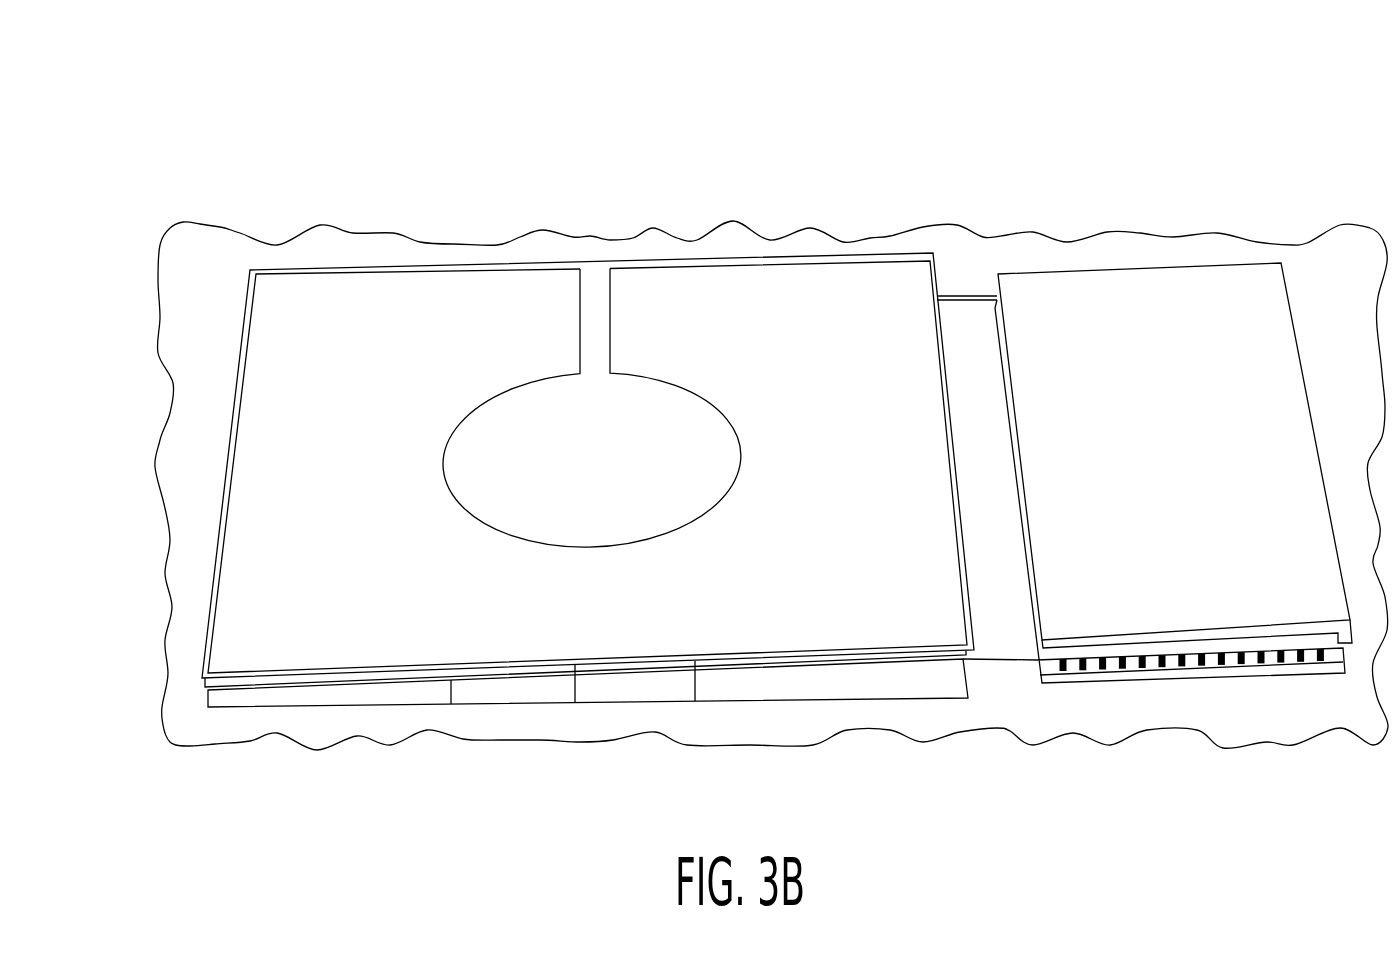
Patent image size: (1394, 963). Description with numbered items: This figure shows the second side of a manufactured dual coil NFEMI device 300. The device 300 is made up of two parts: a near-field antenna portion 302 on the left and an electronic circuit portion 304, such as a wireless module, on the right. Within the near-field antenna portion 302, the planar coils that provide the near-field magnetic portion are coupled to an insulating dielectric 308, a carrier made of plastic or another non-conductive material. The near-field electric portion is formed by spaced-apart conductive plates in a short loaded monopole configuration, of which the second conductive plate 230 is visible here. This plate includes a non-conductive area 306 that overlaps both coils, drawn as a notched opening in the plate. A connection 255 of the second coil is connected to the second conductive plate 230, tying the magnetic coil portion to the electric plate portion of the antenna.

The dual coil NFEMI device 300 is at (152, 101).
The near-field antenna portion 302 is at (946, 257).
The electronic circuit portion 304 is at (1393, 257).
The non-conductive area 306 is at (650, 419).
The insulating dielectric 308 is at (230, 565).
The connection of the second coil 255 is at (577, 690).
The second conductive plate 230 is at (800, 600).